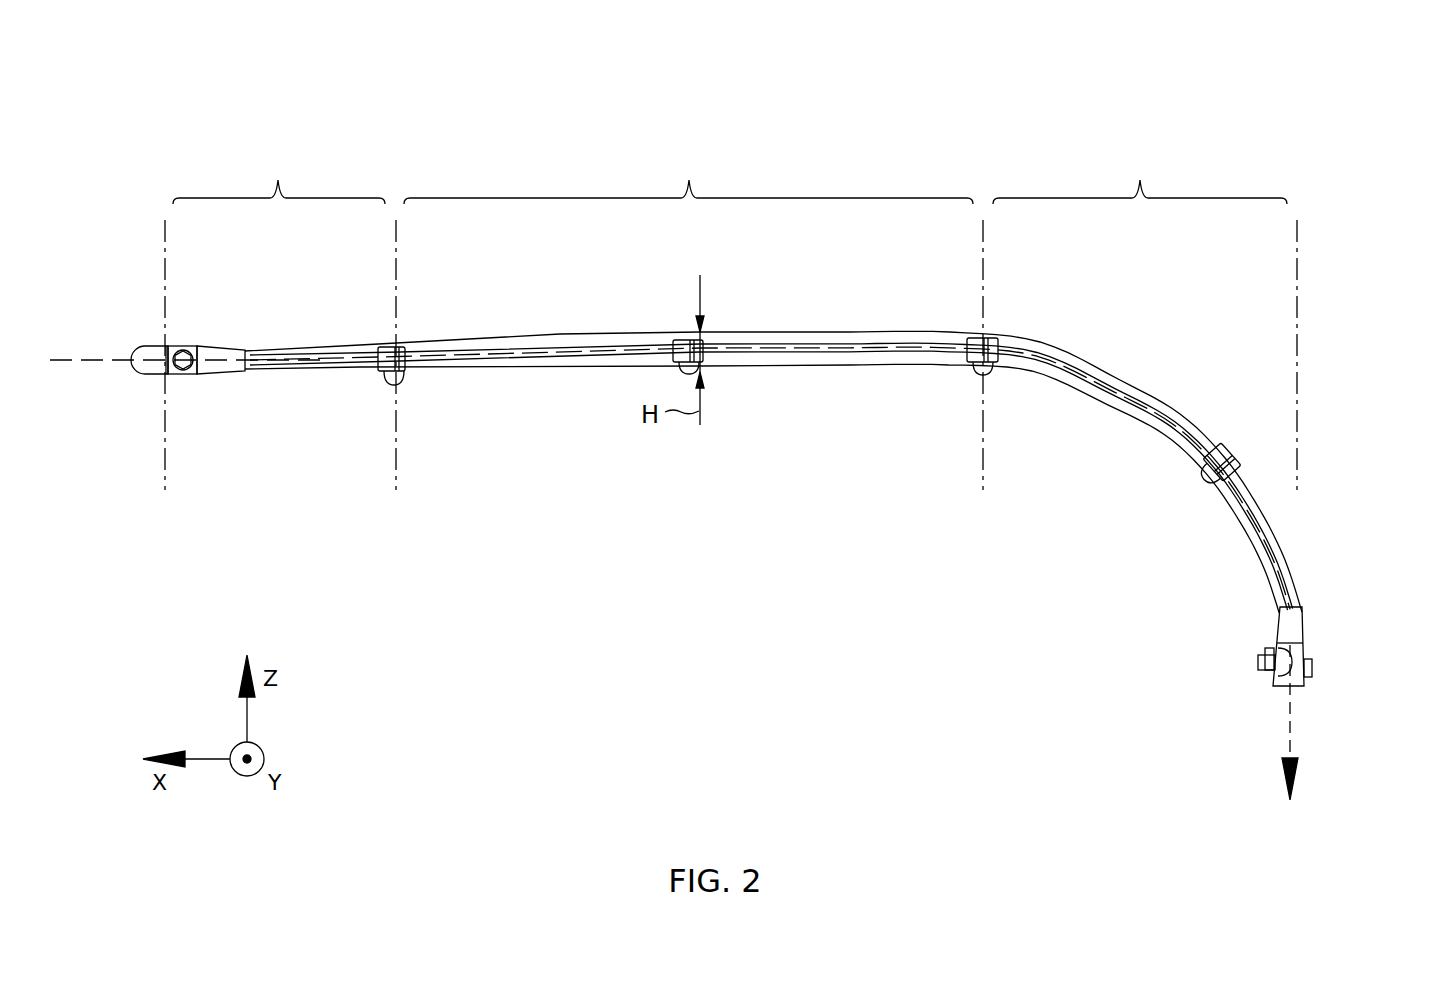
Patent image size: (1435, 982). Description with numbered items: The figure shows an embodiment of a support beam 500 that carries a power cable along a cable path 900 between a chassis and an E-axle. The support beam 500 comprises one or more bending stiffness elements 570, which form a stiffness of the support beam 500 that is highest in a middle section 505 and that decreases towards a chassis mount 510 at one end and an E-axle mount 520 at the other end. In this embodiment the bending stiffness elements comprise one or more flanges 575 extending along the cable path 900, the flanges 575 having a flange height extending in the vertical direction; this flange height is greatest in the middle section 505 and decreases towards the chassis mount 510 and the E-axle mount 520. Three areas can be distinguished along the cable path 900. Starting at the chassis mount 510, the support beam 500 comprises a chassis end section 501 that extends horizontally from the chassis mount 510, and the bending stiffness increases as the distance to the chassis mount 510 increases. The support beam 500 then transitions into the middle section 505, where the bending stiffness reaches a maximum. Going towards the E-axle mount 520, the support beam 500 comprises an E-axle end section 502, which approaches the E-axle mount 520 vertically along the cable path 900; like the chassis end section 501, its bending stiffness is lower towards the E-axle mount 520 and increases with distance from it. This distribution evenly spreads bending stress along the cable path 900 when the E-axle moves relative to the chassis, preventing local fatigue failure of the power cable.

The support beam 500 is at (182, 86).
The chassis end section 501 is at (263, 319).
The middle section 505 is at (773, 380).
The E-axle end section 502 is at (1203, 474).
The chassis mount 510 is at (192, 339).
The E-axle mount 520 is at (1323, 691).
The bending stiffness element 570 is at (577, 327).
The flange 575 is at (752, 357).
The cable path 900 is at (77, 360).